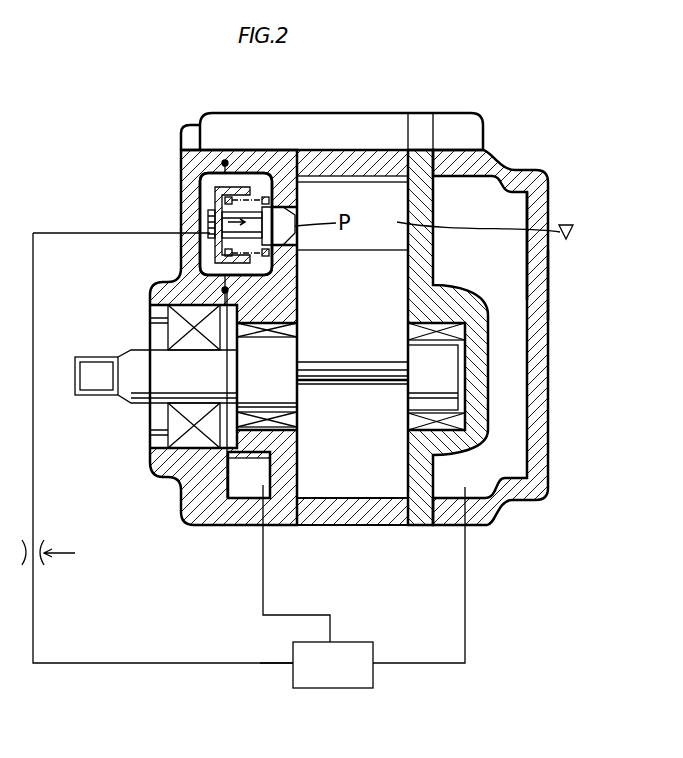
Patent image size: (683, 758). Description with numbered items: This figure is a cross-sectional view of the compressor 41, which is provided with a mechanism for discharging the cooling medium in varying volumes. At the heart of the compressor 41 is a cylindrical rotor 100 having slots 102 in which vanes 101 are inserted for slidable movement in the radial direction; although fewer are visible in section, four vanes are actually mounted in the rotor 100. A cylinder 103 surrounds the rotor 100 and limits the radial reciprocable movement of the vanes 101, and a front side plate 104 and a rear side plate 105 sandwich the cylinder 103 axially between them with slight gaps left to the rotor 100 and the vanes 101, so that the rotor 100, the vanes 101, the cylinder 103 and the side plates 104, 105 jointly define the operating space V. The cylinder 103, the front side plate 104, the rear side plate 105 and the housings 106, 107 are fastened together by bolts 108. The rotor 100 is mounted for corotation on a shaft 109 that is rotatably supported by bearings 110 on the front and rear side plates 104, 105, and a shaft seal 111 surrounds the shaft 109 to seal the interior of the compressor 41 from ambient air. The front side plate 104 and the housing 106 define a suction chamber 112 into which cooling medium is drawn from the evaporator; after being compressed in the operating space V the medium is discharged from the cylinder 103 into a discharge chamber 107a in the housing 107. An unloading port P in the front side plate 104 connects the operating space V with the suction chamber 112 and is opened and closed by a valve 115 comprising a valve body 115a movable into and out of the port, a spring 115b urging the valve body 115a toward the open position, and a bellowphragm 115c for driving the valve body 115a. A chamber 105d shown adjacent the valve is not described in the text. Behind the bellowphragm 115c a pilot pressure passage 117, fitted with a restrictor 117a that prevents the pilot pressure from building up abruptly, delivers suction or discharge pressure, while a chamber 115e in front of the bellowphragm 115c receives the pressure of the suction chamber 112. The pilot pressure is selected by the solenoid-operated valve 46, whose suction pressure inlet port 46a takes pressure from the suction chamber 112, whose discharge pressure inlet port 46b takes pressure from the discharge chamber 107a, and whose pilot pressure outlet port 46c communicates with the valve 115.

The compressor 41 is at (483, 121).
The solenoid-operated valve 46 is at (343, 688).
The suction pressure inlet port 46a is at (333, 640).
The discharge pressure inlet port 46b is at (378, 660).
The pilot pressure outlet port 46c is at (292, 661).
The cylindrical rotor 100 is at (398, 263).
The vanes 101 is at (375, 370).
The slots 102 is at (320, 383).
The cylinder 103 is at (382, 157).
The front side plate 104 is at (283, 157).
The rear side plate 105 is at (420, 158).
The valve chamber 105d is at (205, 192).
The housing 106 is at (225, 160).
The housing 107 is at (499, 168).
The discharge chamber 107a is at (515, 208).
The bolts 108 is at (181, 132).
The shaft 109 is at (141, 353).
The bearings 110 is at (490, 428).
The shaft seal 111 is at (175, 427).
The suction chamber 112 is at (277, 221).
The valve 115 is at (210, 223).
The valve body 115a is at (287, 207).
The spring 115b is at (258, 258).
The bellowphragm 115c is at (228, 270).
The chamber 115e is at (266, 268).
The pilot pressure passage 117 is at (133, 661).
The restrictor 117a is at (73, 553).